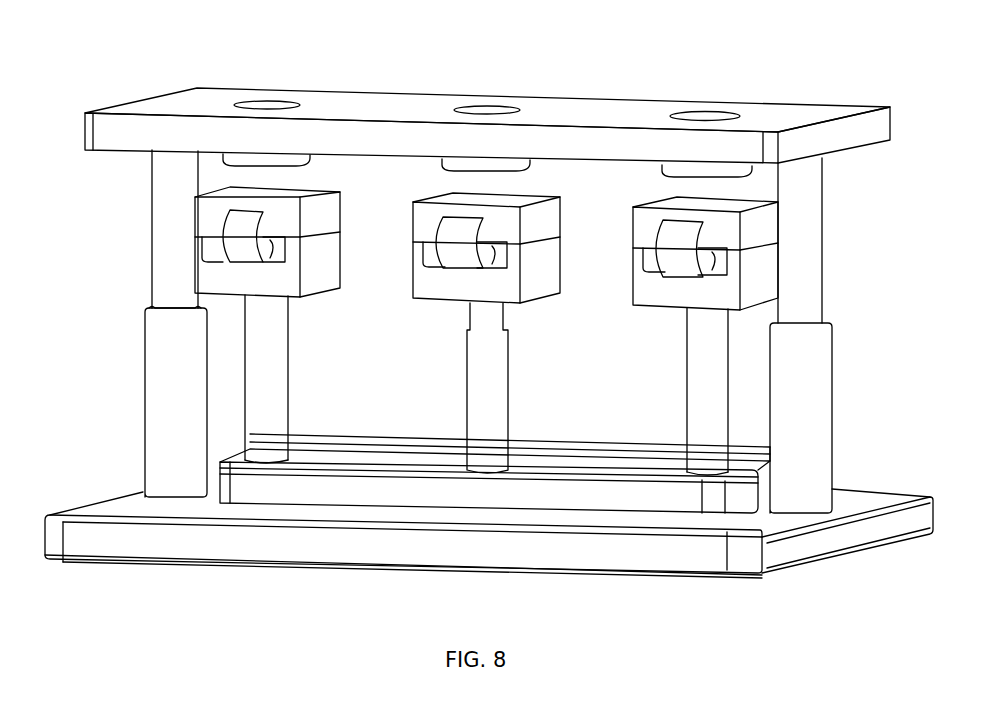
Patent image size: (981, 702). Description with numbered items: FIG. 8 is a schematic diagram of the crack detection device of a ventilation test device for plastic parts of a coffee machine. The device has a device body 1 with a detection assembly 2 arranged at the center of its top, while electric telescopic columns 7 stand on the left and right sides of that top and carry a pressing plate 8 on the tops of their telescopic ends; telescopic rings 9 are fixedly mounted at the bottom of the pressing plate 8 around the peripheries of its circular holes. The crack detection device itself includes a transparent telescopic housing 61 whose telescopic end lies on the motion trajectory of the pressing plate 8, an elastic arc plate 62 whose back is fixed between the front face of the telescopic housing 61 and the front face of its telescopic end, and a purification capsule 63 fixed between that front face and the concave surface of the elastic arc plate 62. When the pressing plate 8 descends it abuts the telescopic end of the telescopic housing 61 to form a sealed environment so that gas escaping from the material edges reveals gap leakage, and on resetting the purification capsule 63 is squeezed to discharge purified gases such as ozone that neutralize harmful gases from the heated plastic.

The device body 1 is at (123, 533).
The detection assembly 2 is at (262, 483).
The electric telescopic columns 7 is at (182, 368).
The pressing plate 8 is at (160, 112).
The telescopic rings 9 is at (253, 157).
The telescopic housing 61 is at (178, 242).
The elastic arc plate 62 is at (243, 253).
The purification capsule 63 is at (197, 248).